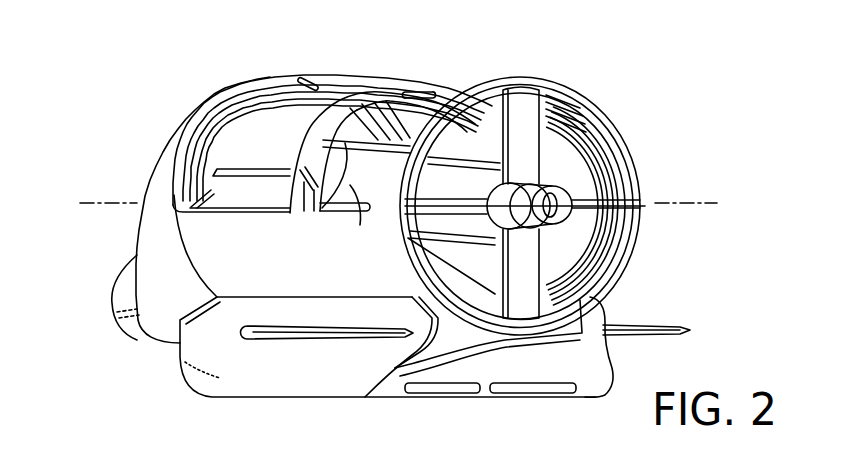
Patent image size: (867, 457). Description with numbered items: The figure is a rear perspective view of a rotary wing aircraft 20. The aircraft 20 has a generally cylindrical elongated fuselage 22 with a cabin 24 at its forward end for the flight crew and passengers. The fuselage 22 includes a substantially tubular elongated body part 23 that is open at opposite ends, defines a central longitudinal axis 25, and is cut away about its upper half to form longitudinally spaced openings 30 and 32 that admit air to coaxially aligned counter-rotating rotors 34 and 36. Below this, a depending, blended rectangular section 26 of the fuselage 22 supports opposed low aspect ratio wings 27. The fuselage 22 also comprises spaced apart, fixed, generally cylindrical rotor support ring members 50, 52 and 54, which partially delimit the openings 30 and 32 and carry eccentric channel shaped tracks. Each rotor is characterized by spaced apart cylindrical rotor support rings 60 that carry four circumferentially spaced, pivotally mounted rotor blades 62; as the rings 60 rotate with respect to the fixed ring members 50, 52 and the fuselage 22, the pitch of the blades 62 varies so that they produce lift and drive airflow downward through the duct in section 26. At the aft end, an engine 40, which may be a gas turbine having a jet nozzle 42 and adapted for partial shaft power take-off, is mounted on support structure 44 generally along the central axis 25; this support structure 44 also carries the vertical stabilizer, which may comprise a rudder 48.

The rotary wing aircraft 20 is at (650, 140).
The fuselage 22 is at (182, 285).
The tubular elongated body part 23 is at (200, 237).
The cabin 24 is at (110, 281).
The central longitudinal axis 25 is at (115, 196).
The rectangular fuselage section 26 is at (213, 402).
The wings 27 is at (296, 336).
The opening 30 is at (243, 213).
The opening 32 is at (339, 212).
The rotor 34 is at (320, 80).
The rotor 36 is at (437, 84).
The engine 40 is at (560, 172).
The jet nozzle 42 is at (613, 182).
The support structure 44 is at (494, 96).
The rudder 48 is at (618, 256).
The rotor support ring member 50 is at (249, 92).
The rotor support ring member 52 is at (387, 80).
The rotor support ring member 54 is at (613, 132).
The rotor support rings 60 is at (260, 122).
The rotor blades 62 is at (238, 168).